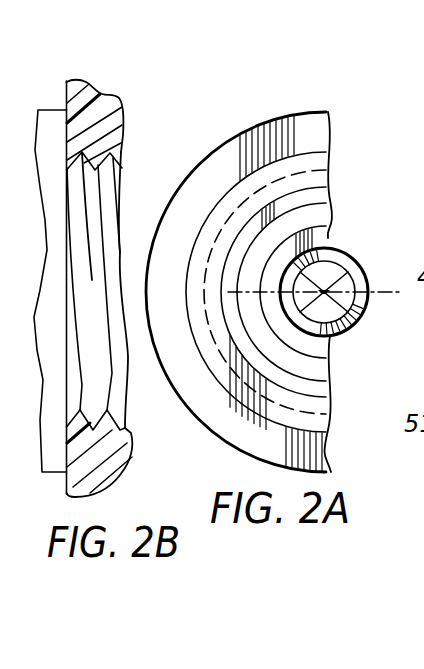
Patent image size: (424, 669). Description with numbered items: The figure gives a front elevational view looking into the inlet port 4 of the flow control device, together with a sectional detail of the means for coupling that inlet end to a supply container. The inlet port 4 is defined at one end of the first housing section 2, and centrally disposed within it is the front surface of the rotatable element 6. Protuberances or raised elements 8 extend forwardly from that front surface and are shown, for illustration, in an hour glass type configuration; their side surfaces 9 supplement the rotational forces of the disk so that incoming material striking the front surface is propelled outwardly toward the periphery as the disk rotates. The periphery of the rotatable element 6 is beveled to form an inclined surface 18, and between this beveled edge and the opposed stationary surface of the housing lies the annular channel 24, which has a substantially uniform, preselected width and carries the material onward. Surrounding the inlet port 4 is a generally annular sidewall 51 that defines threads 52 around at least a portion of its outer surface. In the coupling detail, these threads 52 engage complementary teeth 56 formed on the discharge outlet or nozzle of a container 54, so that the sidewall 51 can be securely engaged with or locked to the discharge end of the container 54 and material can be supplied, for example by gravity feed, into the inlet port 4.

In FIG. 2B, the first housing section 2 is at (45, 90).
In FIG. 2A, the inlet port 4 is at (258, 277).
In FIG. 2A, the rotatable element 6 is at (296, 243).
In FIG. 2A, the raised elements 8 is at (286, 336).
In FIG. 2A, the side surfaces 9 is at (300, 304).
In FIG. 2A, the inclined surface 18 is at (356, 268).
In FIG. 2A, the channel 24 is at (316, 233).
In FIG. 2A, the annular sidewall 51 is at (298, 113).
In FIG. 2A, the threads 52 is at (233, 203).
In FIG. 2B, the threads 52 is at (112, 373).
In FIG. 2B, the container 54 is at (97, 108).
In FIG. 2B, the teeth 56 is at (123, 180).